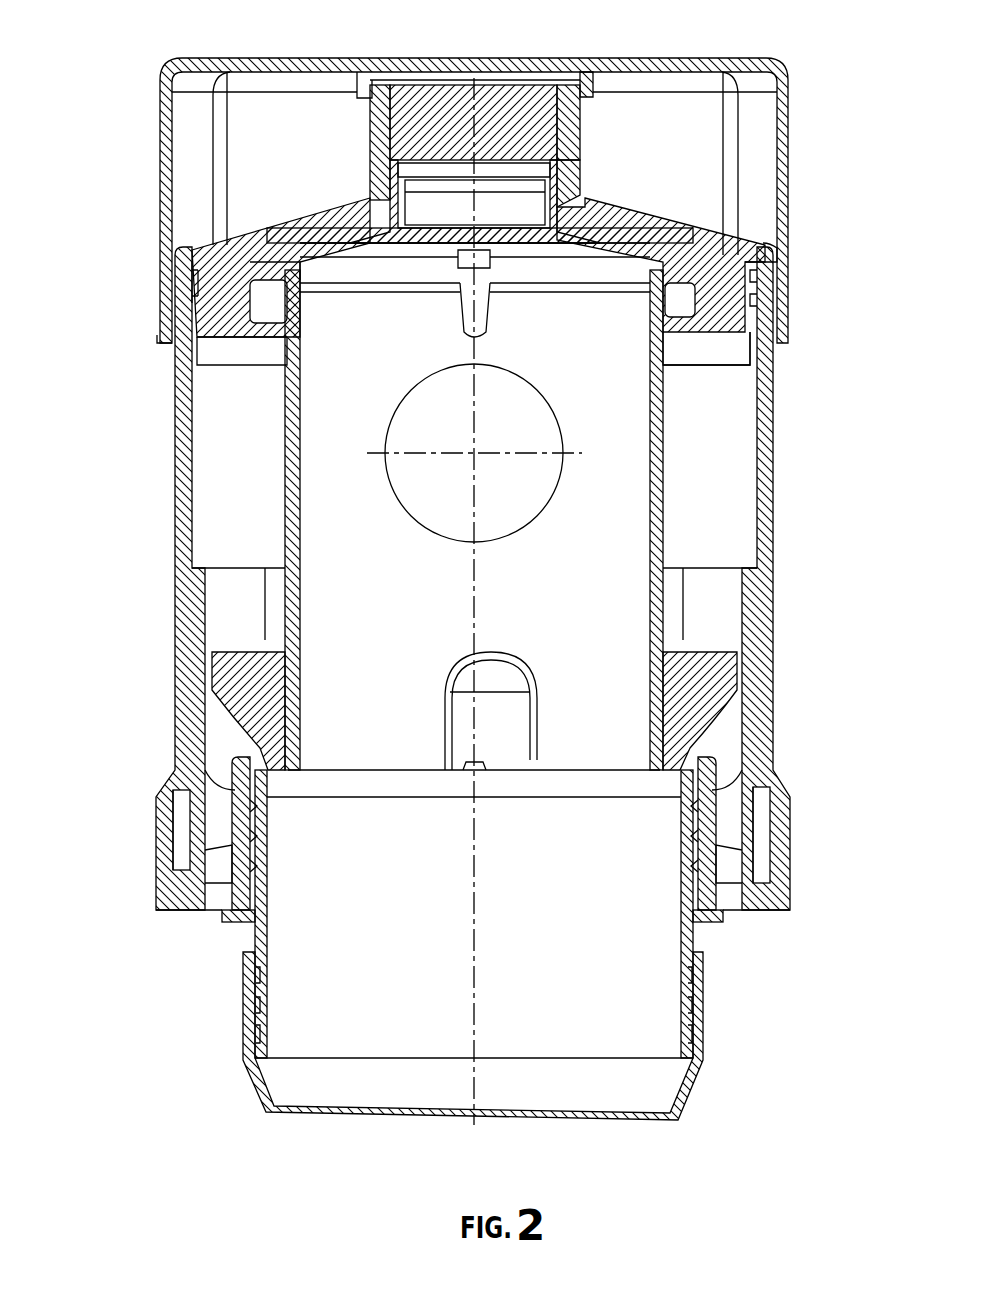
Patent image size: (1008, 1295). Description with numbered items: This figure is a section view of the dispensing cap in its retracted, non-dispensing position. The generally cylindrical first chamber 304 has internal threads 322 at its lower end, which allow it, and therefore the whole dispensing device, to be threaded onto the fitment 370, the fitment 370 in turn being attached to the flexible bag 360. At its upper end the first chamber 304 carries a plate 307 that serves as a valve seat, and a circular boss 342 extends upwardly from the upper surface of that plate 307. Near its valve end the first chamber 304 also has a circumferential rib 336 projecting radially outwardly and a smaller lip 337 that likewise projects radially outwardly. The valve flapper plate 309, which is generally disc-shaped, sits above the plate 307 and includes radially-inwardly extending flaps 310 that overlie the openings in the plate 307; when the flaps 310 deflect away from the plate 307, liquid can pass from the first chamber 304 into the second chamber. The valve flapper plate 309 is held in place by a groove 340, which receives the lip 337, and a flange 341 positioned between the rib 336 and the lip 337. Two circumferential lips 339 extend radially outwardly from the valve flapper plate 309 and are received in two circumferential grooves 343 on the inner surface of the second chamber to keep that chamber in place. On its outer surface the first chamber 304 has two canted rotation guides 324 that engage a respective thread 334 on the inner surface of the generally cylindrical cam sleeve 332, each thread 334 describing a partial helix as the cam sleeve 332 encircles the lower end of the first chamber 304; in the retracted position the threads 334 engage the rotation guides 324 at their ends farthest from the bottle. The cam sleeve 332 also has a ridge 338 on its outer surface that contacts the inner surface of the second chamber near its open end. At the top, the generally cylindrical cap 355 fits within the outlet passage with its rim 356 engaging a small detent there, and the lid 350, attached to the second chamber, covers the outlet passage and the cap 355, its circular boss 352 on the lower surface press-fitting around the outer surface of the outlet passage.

The first chamber 304 is at (665, 487).
The plate 307 is at (687, 240).
The valve flapper plate 309 is at (230, 258).
The flaps 310 is at (313, 240).
The internal threads 322 is at (703, 838).
The rotation guides 324 is at (707, 671).
The cam sleeve 332 is at (745, 690).
The thread 334 is at (730, 825).
The circumferential rib 336 is at (703, 333).
The lip 337 is at (757, 256).
The ridge 338 is at (760, 868).
The circumferential lips 339 is at (757, 282).
The groove 340 is at (235, 288).
The flange 341 is at (240, 307).
The circular boss 342 is at (552, 207).
The circumferential grooves 343 is at (178, 296).
The lid 350 is at (788, 135).
The circular boss 352 is at (362, 78).
The cap 355 is at (517, 105).
The rim 356 is at (556, 150).
The flexible bag 360 is at (700, 1022).
The fitment 370 is at (688, 928).